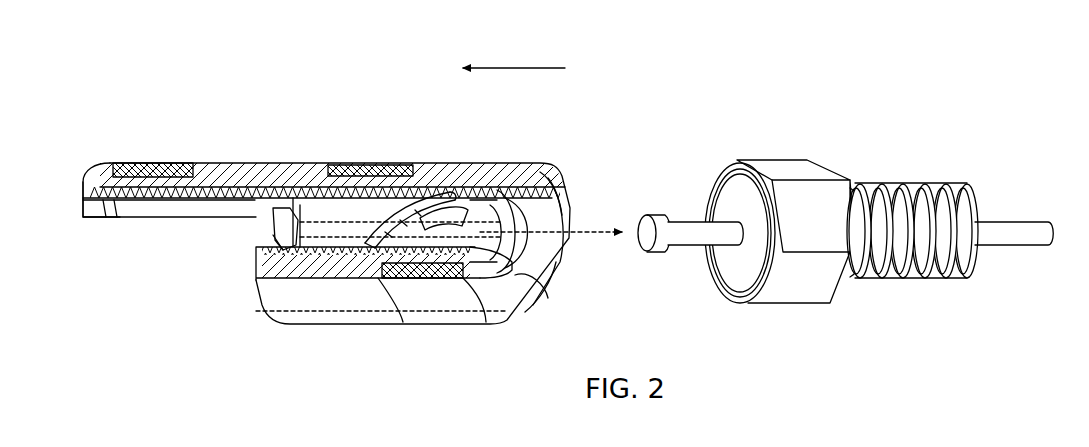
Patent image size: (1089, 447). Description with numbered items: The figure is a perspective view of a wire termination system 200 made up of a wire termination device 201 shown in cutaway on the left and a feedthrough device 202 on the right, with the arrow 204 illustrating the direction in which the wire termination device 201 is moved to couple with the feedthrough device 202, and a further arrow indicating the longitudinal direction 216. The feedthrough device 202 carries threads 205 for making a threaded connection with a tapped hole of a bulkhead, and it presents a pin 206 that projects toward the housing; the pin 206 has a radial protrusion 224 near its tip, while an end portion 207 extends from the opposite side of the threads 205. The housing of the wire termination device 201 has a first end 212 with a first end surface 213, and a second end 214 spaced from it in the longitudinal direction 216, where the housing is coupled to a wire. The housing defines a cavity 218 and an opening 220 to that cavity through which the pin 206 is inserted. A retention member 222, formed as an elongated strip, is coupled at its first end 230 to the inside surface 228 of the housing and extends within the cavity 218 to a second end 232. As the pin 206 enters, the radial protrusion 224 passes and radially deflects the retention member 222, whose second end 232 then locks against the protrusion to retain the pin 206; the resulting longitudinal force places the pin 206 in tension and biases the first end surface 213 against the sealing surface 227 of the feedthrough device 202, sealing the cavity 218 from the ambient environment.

The wire termination system 200 is at (230, 48).
The wire termination device 201 is at (290, 162).
The feedthrough device 202 is at (744, 156).
The arrow 204 is at (603, 231).
The threads 205 is at (897, 178).
The pin 206 is at (694, 218).
The cable conductor 207 is at (1015, 221).
The first end 212 is at (560, 203).
The first end surface 213 is at (572, 201).
The second end 214 is at (80, 170).
The longitudinal direction 216 is at (500, 67).
The cavity 218 is at (358, 232).
The opening 220 is at (533, 249).
The retention member 222 is at (396, 205).
The radial protrusion 224 is at (654, 211).
The sealing surface 227 is at (752, 300).
The inside surface 228 is at (342, 200).
The first end 230 is at (500, 190).
The second end 232 is at (367, 248).